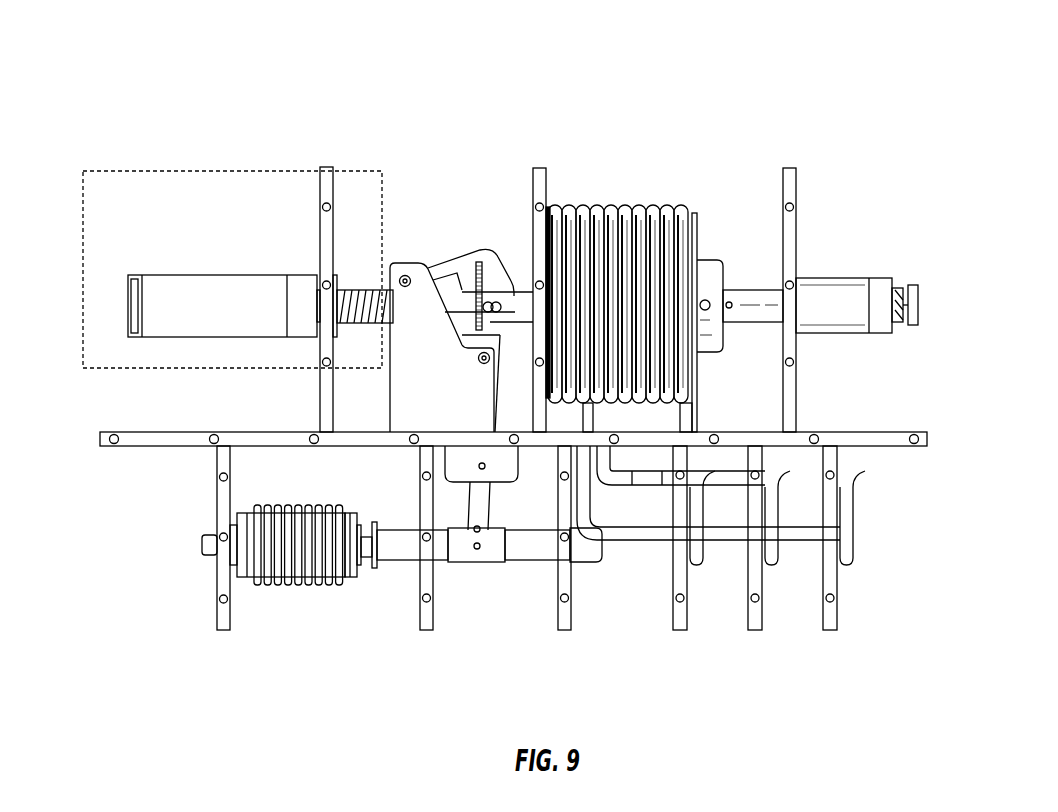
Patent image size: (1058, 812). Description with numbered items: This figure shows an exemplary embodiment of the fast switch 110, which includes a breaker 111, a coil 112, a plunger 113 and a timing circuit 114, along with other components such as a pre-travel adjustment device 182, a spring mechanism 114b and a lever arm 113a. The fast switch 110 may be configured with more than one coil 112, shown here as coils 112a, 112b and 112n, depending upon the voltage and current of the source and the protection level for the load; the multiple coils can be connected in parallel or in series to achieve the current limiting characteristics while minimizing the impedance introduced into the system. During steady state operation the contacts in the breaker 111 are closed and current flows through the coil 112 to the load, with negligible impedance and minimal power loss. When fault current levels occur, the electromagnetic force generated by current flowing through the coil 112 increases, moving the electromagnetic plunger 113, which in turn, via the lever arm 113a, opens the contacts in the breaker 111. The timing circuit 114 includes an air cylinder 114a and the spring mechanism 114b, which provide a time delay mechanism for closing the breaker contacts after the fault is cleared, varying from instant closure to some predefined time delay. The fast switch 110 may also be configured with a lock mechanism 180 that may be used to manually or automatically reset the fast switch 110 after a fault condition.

The fast switch 110 is at (890, 39).
The breaker 111 is at (260, 616).
The coil 112 is at (574, 196).
The coil 112a is at (680, 622).
The coil 112b is at (755, 622).
The coil 112n is at (830, 622).
The plunger 113 is at (712, 197).
The lever arm 113a is at (479, 549).
The timing circuit 114 is at (221, 162).
The air cylinder 114a is at (250, 274).
The spring mechanism 114b is at (362, 288).
The lock mechanism 180 is at (490, 265).
The pre-travel adjustment device 182 is at (851, 292).